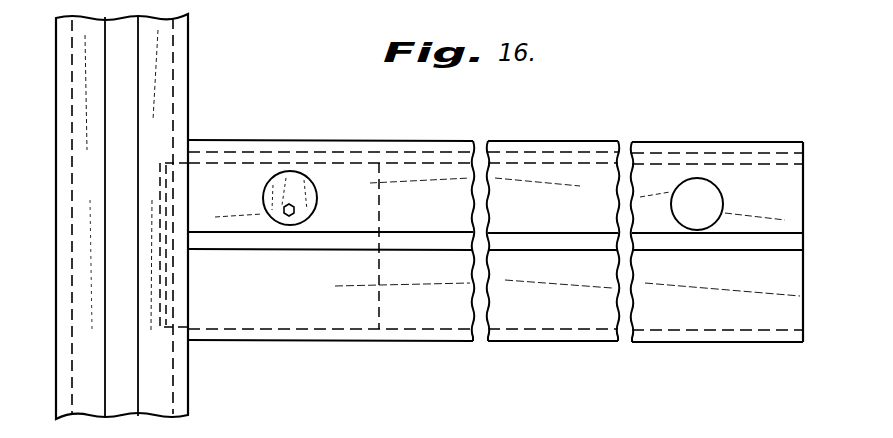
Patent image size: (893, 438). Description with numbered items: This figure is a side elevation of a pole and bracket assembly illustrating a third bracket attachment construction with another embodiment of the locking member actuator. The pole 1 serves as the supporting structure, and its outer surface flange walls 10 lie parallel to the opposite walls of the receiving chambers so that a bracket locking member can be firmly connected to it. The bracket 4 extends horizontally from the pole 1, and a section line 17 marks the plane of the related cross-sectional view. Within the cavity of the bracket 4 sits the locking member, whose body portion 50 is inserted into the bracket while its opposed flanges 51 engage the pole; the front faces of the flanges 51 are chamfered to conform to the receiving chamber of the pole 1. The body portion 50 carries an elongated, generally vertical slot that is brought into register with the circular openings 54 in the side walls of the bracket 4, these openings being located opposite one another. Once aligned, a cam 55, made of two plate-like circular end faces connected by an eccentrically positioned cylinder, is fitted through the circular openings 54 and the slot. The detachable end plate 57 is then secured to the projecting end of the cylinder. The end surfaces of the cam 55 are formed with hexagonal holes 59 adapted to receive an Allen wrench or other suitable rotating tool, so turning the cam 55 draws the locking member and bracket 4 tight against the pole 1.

The pole 1 is at (206, 35).
The bracket 4 is at (549, 133).
The outer surface flange walls 10 is at (189, 80).
The section line 17- 17 is at (28, 180).
The body portion 50 is at (263, 312).
The opposed flanges 51 is at (167, 150).
The circular openings 54 is at (721, 196).
The cam 55 is at (288, 170).
The end plate 57 is at (304, 190).
The hexagonal holes 59 is at (289, 218).